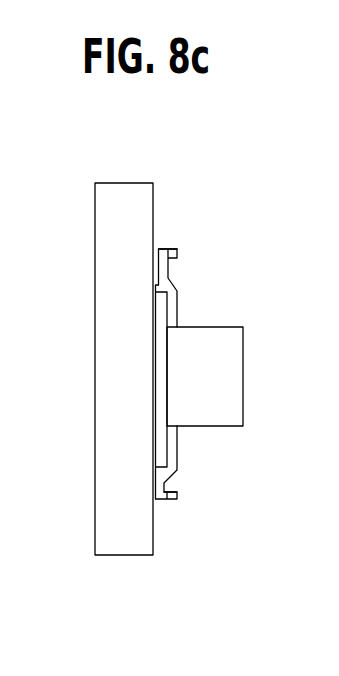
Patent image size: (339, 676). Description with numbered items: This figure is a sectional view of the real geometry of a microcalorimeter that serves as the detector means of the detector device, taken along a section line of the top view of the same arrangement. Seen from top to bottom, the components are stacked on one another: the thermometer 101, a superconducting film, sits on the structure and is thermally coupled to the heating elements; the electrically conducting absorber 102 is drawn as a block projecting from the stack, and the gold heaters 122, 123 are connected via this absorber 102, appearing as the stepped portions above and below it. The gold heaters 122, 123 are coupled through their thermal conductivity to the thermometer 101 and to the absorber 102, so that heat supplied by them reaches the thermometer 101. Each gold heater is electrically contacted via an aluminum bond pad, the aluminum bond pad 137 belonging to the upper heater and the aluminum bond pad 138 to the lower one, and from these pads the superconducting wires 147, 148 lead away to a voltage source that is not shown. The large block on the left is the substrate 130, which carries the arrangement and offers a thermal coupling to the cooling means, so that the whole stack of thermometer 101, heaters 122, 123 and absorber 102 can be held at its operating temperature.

The thermometer 101 is at (160, 312).
The absorber 102 is at (232, 353).
The gold heater 122 is at (177, 443).
The gold heater 123 is at (160, 250).
The substrate 130 is at (112, 543).
The aluminum bond pad 137 is at (183, 138).
The aluminum bond pad 138 is at (177, 500).
The superconducting wire 147 is at (218, 155).
The superconducting wire 148 is at (214, 557).